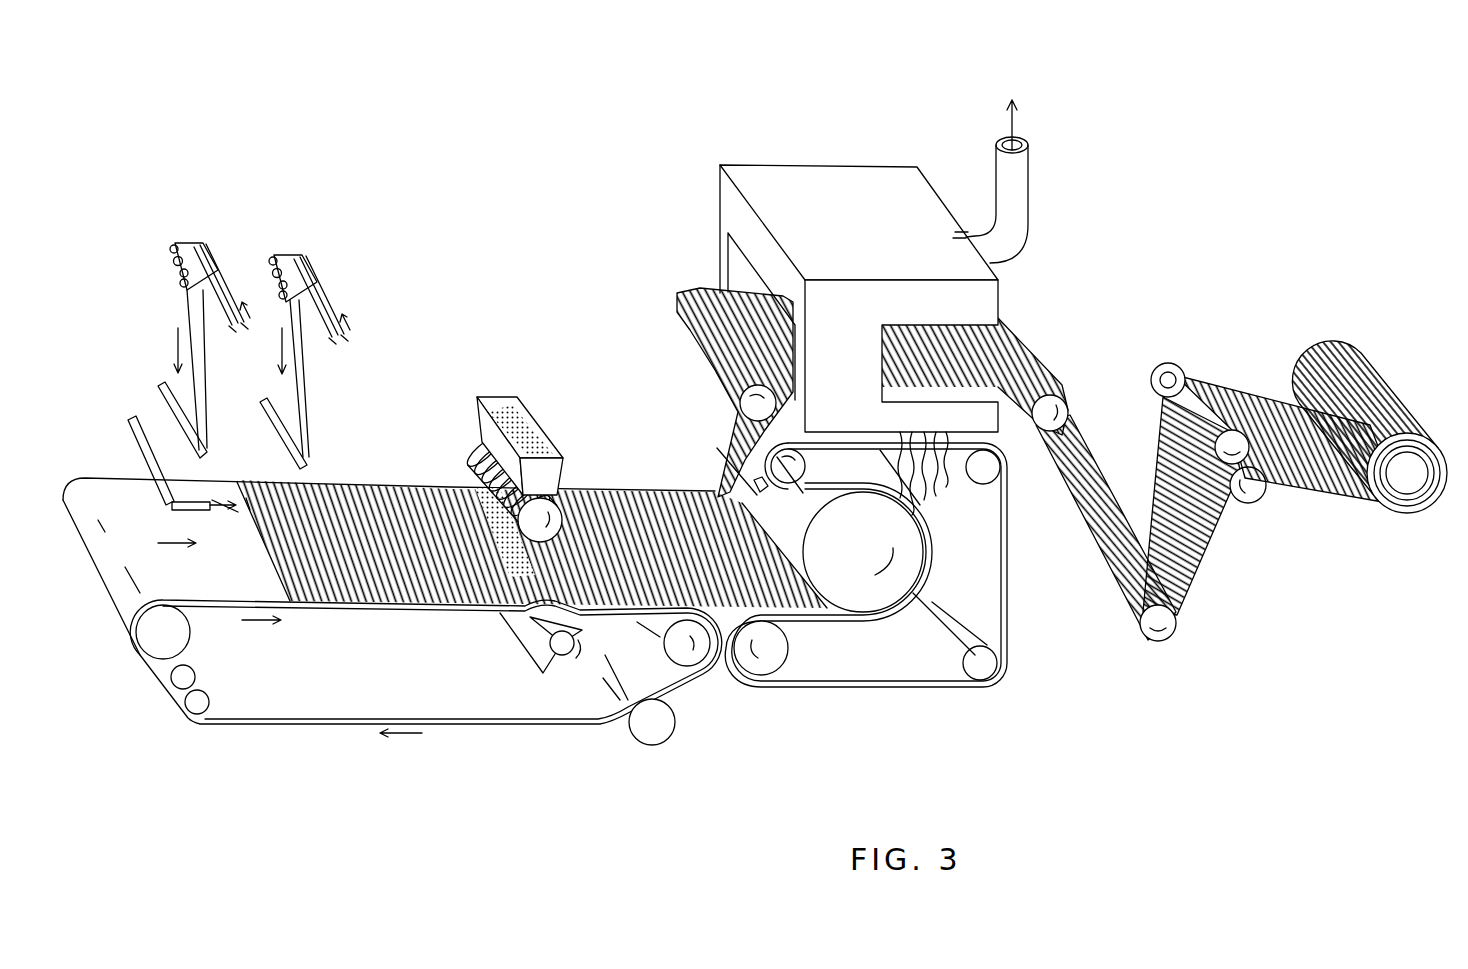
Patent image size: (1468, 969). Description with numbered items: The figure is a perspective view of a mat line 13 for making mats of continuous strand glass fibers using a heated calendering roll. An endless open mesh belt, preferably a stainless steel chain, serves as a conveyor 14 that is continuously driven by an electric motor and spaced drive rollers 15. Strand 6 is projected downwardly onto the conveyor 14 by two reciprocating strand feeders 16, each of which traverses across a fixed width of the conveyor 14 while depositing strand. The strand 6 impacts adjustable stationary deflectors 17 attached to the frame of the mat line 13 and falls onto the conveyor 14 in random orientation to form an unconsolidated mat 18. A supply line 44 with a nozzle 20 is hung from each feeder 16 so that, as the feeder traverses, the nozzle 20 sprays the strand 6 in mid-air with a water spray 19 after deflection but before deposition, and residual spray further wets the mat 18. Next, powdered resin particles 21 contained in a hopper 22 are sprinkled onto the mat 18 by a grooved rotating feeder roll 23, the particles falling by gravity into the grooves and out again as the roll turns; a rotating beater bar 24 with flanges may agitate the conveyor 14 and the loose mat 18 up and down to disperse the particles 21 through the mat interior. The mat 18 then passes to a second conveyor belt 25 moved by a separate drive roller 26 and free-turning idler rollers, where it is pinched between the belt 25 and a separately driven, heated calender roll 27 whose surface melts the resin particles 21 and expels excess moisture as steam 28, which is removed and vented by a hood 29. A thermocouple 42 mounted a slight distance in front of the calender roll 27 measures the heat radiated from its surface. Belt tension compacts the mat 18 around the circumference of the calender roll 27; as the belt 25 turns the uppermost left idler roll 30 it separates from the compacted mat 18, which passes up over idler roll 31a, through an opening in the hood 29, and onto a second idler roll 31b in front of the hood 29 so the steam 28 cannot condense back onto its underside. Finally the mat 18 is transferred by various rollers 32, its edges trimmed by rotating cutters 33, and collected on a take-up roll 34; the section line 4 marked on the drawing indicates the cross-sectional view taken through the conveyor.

The section line 4- 4 is at (310, 458).
The strand 6 is at (223, 318).
The mat line 13 is at (550, 303).
The conveyor 14 is at (150, 478).
The drive rollers 15 is at (680, 662).
The reciprocating strand feeder 16 is at (165, 237).
The adjustable stationary deflector 17 is at (203, 457).
The mat 18 is at (398, 478).
The water spray 19 is at (248, 505).
The nozzle 20 is at (215, 514).
The powdered resin particles 21 is at (507, 410).
The hopper 22 is at (530, 415).
The grooved rotating feeder roll 23 is at (478, 450).
The rotating beater bar 24 is at (580, 640).
The second conveyor belt 25 is at (922, 685).
The drive roller 26 is at (762, 668).
The calender roll 27 is at (871, 551).
The steam 28 is at (933, 507).
The hood 29 is at (813, 162).
The uppermost left idler roll 30 is at (790, 458).
The idler roll 31a is at (753, 410).
The second idler roll 31b is at (1052, 398).
The rollers 32 is at (1253, 502).
The rotating cutters 33 is at (1177, 360).
The take-up roll 34 is at (1397, 382).
The thermocouple 42 is at (752, 483).
The supply line 44 is at (167, 493).